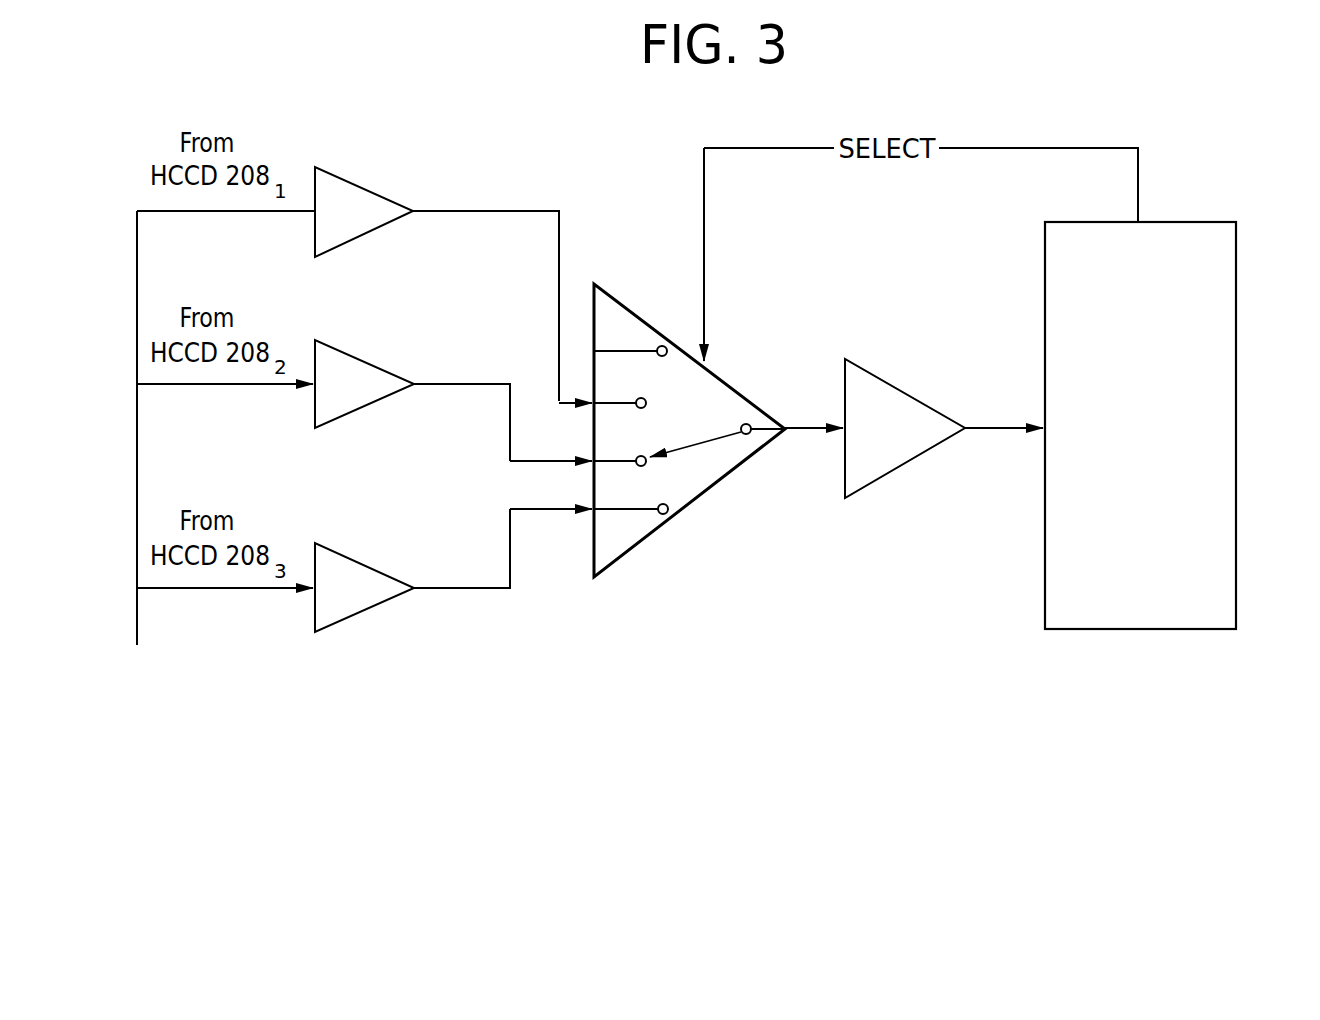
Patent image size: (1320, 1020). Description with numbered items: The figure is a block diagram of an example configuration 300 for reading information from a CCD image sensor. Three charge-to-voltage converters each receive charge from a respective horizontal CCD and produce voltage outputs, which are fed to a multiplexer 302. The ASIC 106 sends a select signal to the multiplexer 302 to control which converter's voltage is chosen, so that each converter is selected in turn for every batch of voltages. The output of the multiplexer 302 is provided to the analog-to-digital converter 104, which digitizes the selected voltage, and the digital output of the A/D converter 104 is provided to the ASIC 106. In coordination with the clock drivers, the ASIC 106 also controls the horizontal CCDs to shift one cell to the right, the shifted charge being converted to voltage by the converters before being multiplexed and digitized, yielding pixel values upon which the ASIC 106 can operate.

The multiplexer 302 is at (690, 505).
The analog-to-digital (A/D) converter 104 is at (905, 465).
The ASIC 106 is at (1145, 630).
The example configuration 300 is at (856, 587).